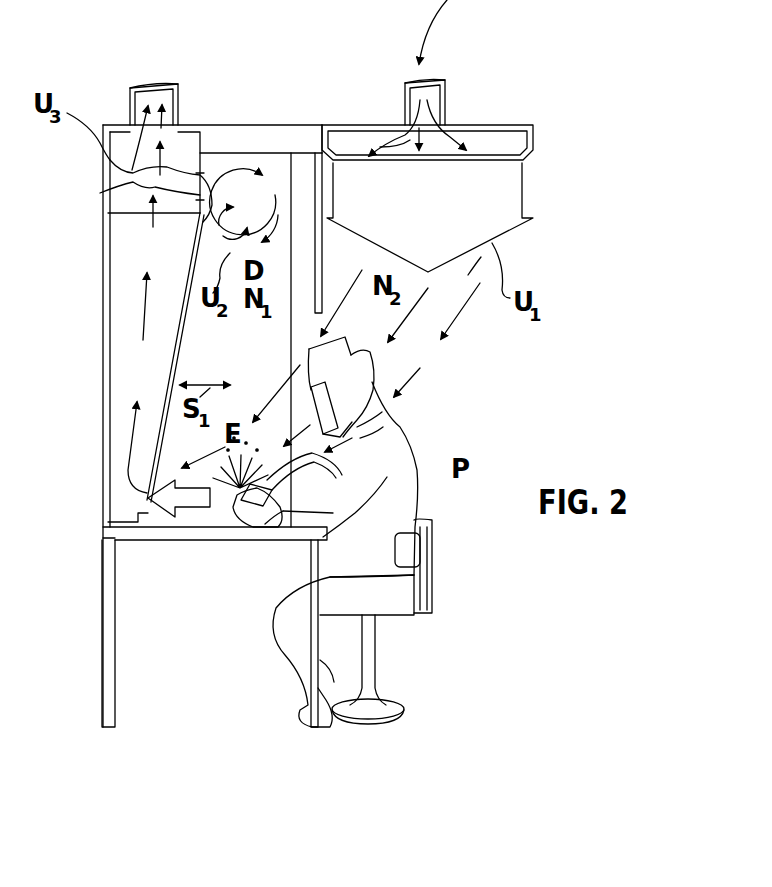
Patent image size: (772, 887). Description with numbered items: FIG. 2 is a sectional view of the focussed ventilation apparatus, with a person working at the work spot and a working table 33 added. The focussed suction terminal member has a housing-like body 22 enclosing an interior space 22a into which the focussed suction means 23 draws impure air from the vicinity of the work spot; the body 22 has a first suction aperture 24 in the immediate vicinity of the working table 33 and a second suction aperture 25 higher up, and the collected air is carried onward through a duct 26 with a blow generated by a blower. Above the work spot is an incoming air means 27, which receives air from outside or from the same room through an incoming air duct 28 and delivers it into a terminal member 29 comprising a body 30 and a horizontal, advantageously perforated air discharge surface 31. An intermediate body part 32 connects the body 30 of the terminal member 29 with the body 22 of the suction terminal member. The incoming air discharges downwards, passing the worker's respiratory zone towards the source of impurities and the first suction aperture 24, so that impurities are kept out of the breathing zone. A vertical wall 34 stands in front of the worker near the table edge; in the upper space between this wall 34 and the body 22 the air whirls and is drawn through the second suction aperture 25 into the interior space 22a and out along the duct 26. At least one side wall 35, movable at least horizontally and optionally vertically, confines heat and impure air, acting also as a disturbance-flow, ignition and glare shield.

The body of the focussed suction terminal member 22 is at (100, 254).
The interior space of the housing structure 22a is at (161, 381).
The focussed suction means 23 is at (97, 168).
The first suction aperture 24 is at (143, 503).
The second suction aperture 25 is at (100, 193).
The duct 26 is at (170, 97).
The incoming air means 27 is at (445, 32).
The incoming air duct 28 is at (440, 95).
The terminal member of the incoming air means 29 is at (543, 128).
The body of the terminal member 30 is at (493, 132).
The air discharge surface 31 is at (507, 164).
The body part 32 is at (233, 132).
The working table 33 is at (147, 540).
The vertical wall 34 is at (310, 192).
The side wall 35 is at (260, 173).